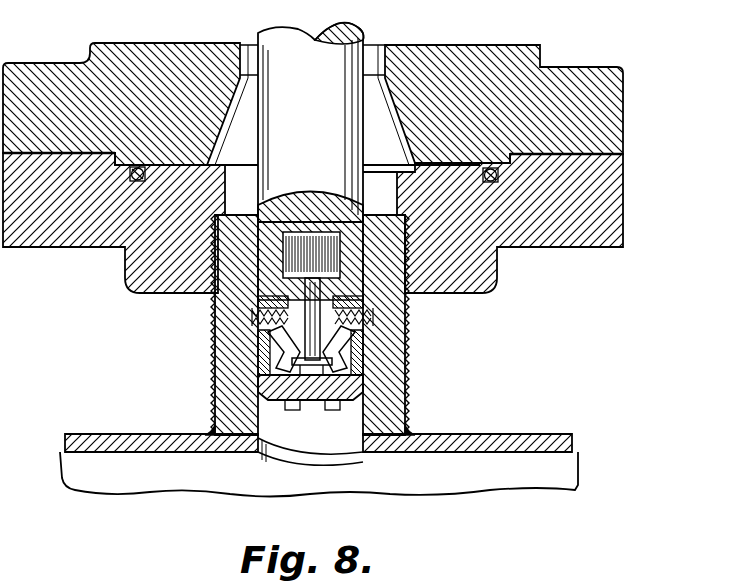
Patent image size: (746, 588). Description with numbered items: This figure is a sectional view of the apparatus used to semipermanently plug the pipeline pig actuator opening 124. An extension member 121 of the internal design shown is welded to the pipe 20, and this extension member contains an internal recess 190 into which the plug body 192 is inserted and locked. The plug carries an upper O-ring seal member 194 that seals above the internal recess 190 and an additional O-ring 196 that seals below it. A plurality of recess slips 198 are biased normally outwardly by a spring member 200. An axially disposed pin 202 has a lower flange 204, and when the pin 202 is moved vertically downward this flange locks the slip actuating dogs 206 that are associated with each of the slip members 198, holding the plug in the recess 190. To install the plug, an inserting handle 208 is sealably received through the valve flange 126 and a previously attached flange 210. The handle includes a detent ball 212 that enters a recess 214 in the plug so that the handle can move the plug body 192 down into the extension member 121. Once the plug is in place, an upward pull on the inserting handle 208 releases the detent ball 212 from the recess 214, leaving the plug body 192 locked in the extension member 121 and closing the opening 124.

The pipe 20 is at (120, 434).
The extension member 121 is at (402, 412).
The opening 124 is at (350, 456).
The valve flange 126 is at (612, 90).
The internal recess 190 is at (378, 346).
The plug body 192 is at (265, 300).
The upper O-ring seal member 194 is at (398, 298).
The additional O-ring 196 is at (378, 352).
The recess slips 198 is at (258, 318).
The spring member 200 is at (300, 343).
The axially disposed pin 202 is at (283, 358).
The lower flange 204 is at (380, 341).
The slip actuating dogs 206 is at (265, 378).
The inserting handle 208 is at (330, 98).
The previously attached flange 210 is at (612, 183).
The detent ball 212 is at (232, 232).
The recess 214 is at (375, 228).